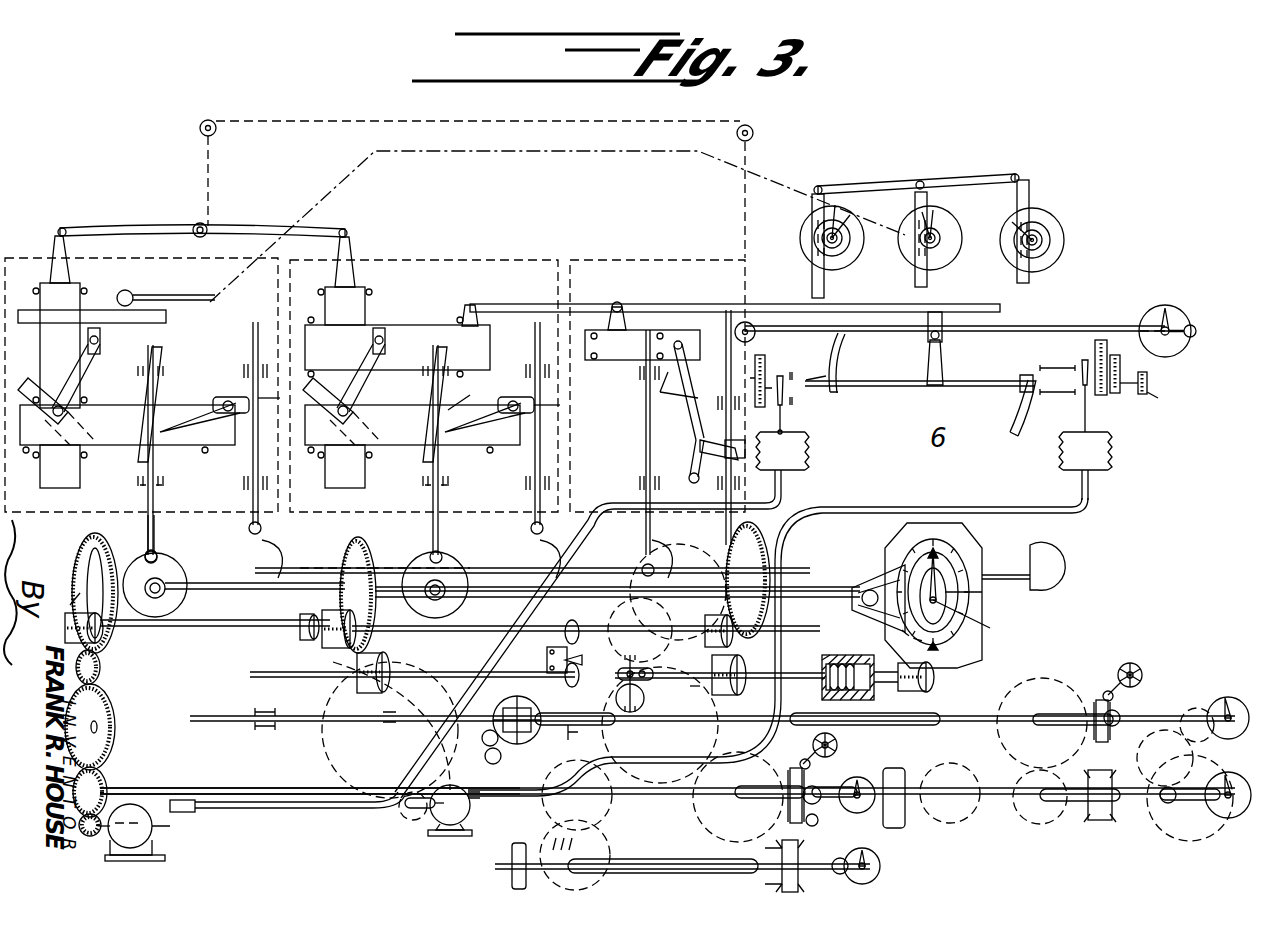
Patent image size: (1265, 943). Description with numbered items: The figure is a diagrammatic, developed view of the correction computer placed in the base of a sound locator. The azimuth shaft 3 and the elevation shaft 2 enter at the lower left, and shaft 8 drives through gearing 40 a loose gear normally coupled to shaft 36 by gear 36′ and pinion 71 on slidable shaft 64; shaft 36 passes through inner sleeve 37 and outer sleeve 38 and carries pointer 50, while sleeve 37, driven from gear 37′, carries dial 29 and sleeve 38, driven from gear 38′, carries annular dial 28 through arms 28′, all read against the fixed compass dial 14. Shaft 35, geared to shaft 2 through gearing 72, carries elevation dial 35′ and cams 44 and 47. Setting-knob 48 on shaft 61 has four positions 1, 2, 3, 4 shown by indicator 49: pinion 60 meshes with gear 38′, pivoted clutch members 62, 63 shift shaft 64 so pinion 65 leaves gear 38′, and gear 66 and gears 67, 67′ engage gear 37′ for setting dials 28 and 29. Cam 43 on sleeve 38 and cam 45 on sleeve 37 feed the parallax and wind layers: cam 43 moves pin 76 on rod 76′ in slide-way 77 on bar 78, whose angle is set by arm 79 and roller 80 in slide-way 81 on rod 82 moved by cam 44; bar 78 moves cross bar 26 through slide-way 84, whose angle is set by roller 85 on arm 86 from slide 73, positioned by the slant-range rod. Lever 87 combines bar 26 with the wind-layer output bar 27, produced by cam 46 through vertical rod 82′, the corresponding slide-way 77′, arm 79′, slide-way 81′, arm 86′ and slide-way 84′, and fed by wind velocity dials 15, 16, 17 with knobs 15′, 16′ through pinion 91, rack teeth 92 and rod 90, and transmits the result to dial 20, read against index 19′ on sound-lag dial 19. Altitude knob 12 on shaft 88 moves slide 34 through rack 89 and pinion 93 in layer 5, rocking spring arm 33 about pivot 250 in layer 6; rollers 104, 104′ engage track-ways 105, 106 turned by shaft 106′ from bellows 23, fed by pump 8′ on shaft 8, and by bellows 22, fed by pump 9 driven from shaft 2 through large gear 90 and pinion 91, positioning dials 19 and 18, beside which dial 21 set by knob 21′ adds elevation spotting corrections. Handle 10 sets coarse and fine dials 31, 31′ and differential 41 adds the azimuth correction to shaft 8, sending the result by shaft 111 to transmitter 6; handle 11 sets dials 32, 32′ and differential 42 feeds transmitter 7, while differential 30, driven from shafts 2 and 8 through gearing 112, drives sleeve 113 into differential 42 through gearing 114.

The coil section 1 is at (812, 665).
The main drive shaft 2 is at (232, 720).
The first unit 3 is at (141, 371).
The second unit 4 is at (424, 371).
The third unit 5 is at (657, 374).
The shaft 6 is at (508, 866).
The plate 7 is at (905, 825).
The shaft 8 is at (138, 788).
The pump 8′ is at (152, 832).
The cylinder 9 is at (465, 818).
The hand wheel 10 is at (838, 745).
The hand wheel 11 is at (1140, 665).
The indicator dial 12 is at (1178, 312).
The dial plate 14 is at (980, 650).
The wheel 15 is at (842, 256).
The hub 15′ is at (820, 238).
The wheel 16 is at (1055, 255).
The hub 16′ is at (1038, 228).
The wheel 17 is at (945, 260).
The scale 18 is at (1100, 340).
The pointer 19 is at (790, 363).
The pointer rod 19′ is at (770, 415).
The scale 20 is at (760, 350).
The scale 21 is at (1118, 355).
The knob 21′ is at (1160, 395).
The bellows 22 is at (1109, 450).
The bellows 23 is at (806, 450).
The lower cylinder 26 is at (341, 433).
The cylinder 27 is at (48, 292).
The pointer 28 is at (945, 568).
The cone 28′ is at (880, 585).
The dial center 29 is at (986, 593).
The coupling 30 is at (495, 700).
The wheel 31 is at (880, 868).
The wheel 31′ is at (862, 812).
The wheel 32 is at (1215, 818).
The wheel 32′ is at (1222, 700).
The rod 33 is at (972, 388).
The lever 34 is at (722, 373).
The pipe 35 is at (600, 540).
The sector 35′ is at (1060, 548).
The gear 36 is at (75, 588).
The rod 36′ is at (118, 540).
The shaft 37 is at (232, 598).
The gear 37′ is at (378, 540).
The shaft 38 is at (472, 604).
The gear 38′ is at (780, 522).
The gear 40 is at (100, 667).
The bracket 41 is at (775, 840).
The bracket 42 is at (1100, 822).
The disk 43 is at (452, 556).
The sector 44 is at (560, 538).
The disk 45 is at (187, 578).
The sector 46 is at (272, 548).
The sector 47 is at (660, 548).
The gear 48 is at (934, 677).
The bracket 49 is at (588, 745).
The pointer 50 is at (980, 621).
The gear 60 is at (752, 663).
The shaft 61 is at (790, 676).
The shaft 62 is at (545, 628).
The clutch 63 is at (590, 652).
The shaft 64 is at (434, 683).
The gear 65 is at (705, 625).
The gear 66 is at (395, 650).
The gear 67 is at (328, 648).
The gear 67′ is at (298, 620).
The gear 71 is at (65, 618).
The coupling 72 is at (658, 660).
The block 73 is at (412, 328).
The lever 76 is at (490, 428).
The clip 76′ is at (437, 490).
The rod 77 is at (425, 455).
The rod 77′ is at (160, 395).
The block 78 is at (270, 429).
The lever 79 is at (462, 398).
The lever 79′ is at (190, 425).
The rod 80 is at (558, 408).
The bracket 81 is at (510, 394).
The bracket 81′ is at (226, 386).
The rod 82 is at (560, 445).
The rod 82′ is at (252, 325).
The rod 84 is at (280, 401).
The arm 84′ is at (48, 395).
The pivot 85 is at (375, 326).
The connecting rod 86 is at (362, 378).
The connecting rod 86′ is at (94, 374).
The bar 87 is at (232, 232).
The rod 88 is at (1033, 317).
The rod 89 is at (730, 303).
The dashed circle 90 is at (355, 700).
The lever 91 is at (128, 292).
The bar 92 is at (166, 316).
The pivot 93 is at (750, 323).
The rod 104 is at (812, 392).
The bracket 104′ is at (1020, 376).
The arc arm 105 is at (853, 352).
The arc arm 106 is at (1022, 440).
The pointer 106′ is at (798, 420).
The marks 111 is at (578, 853).
The pipe bend 112 is at (504, 760).
The sleeve 113 is at (895, 732).
The bracket 114 is at (958, 732).
The lever 250 is at (945, 402).